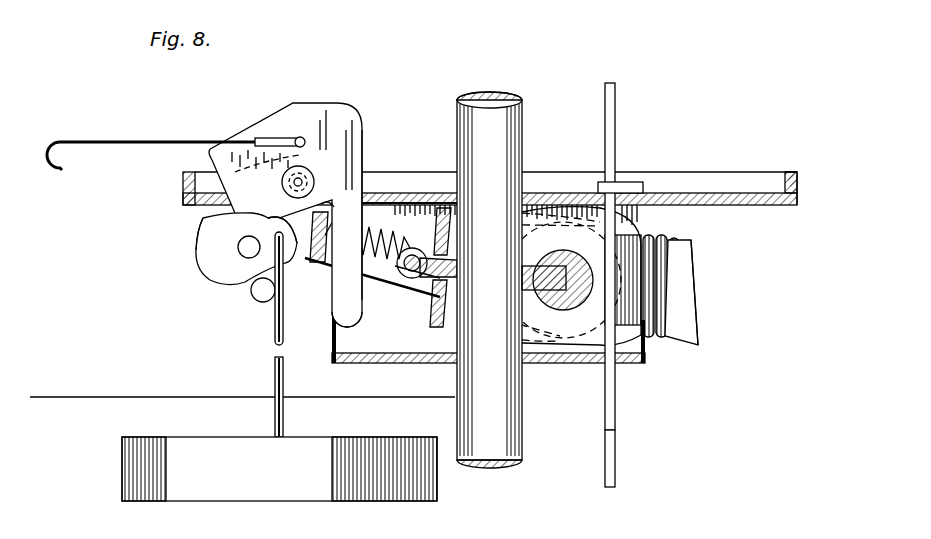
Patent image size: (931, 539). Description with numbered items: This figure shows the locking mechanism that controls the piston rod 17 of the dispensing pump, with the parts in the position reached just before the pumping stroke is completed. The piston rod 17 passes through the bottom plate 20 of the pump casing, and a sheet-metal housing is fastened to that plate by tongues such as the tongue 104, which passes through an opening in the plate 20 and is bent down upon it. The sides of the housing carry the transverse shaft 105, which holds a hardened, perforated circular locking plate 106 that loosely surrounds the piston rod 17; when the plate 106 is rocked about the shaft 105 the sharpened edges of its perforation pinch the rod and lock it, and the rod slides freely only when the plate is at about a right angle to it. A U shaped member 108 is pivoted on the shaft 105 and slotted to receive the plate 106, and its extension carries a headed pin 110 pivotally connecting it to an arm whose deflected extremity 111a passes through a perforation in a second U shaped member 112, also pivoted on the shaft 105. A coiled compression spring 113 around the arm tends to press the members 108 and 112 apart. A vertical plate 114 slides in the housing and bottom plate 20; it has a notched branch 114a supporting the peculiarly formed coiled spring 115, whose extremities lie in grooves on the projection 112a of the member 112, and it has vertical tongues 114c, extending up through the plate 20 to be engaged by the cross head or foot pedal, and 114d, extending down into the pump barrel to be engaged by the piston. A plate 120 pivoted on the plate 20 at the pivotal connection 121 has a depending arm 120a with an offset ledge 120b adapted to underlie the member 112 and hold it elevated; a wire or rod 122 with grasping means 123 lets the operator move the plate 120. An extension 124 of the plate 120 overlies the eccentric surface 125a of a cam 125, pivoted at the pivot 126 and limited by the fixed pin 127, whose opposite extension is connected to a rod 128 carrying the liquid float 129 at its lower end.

The piston rod 17 is at (523, 138).
The bottom plate 20 is at (727, 187).
The tongue 104 is at (625, 187).
The transverse shaft 105 is at (565, 292).
The locking plate 106 is at (430, 296).
The U shaped member 108 is at (437, 357).
The headed pin 110 is at (414, 252).
The deflected extremity of arm 111a is at (332, 262).
The U shaped member 112 is at (322, 203).
The projection 112a is at (688, 273).
The coiled compression spring 113 is at (390, 276).
The vertical plate 114 is at (640, 355).
The branch 114a is at (683, 303).
The vertical tongue 114c is at (612, 105).
The vertical tongue 114d is at (617, 441).
The coiled spring 115 is at (672, 236).
The plate 120 is at (353, 106).
The depending arm 120a is at (347, 217).
The offset ledge 120b is at (322, 335).
The pivotal connection 121 is at (312, 174).
The wire or rod 122 is at (143, 141).
The grasping means 123 is at (62, 172).
The extension 124 is at (206, 216).
The cam 125 is at (203, 268).
The eccentric surface 125a is at (201, 238).
The pivot 126 is at (245, 251).
The fixed pin 127 is at (261, 294).
The rod 128 is at (275, 367).
The liquid float 129 is at (279, 469).